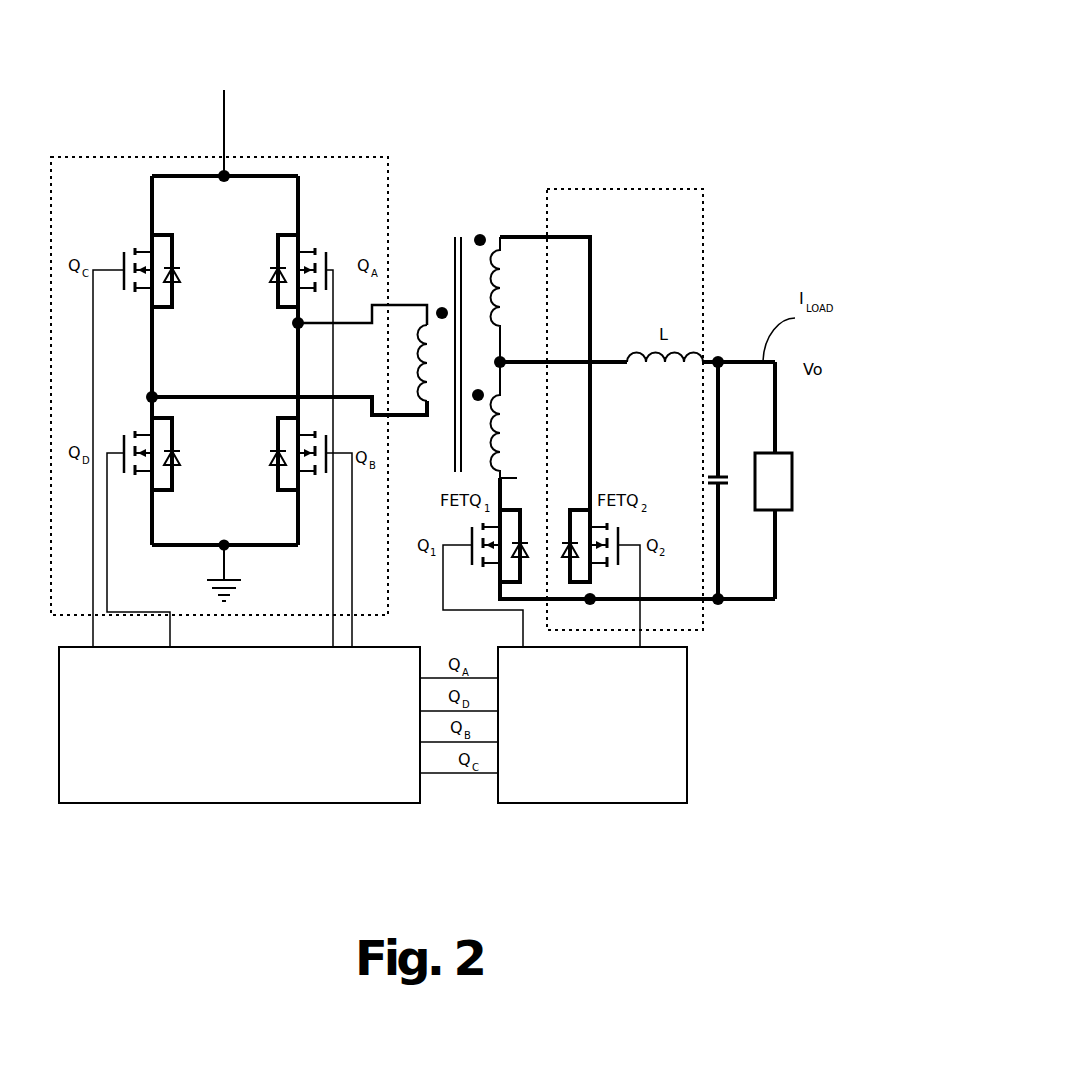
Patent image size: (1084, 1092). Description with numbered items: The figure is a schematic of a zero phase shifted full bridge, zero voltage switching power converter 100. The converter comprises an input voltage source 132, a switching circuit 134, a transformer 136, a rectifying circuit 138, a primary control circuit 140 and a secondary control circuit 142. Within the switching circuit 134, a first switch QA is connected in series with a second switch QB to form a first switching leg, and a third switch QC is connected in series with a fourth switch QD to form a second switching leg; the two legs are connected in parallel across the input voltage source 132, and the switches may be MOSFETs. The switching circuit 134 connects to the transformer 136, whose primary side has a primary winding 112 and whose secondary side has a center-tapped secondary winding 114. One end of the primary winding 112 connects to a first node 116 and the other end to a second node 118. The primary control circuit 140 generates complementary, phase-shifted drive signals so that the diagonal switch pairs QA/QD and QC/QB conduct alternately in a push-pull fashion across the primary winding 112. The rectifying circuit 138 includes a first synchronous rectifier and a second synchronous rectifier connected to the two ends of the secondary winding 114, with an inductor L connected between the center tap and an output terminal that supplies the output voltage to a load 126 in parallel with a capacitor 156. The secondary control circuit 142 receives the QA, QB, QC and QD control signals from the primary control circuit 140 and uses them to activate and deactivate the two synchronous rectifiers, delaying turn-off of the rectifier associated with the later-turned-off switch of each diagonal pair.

The power converter 100 is at (692, 57).
The primary winding 112 is at (434, 318).
The secondary winding 114 is at (498, 250).
The first node 116 is at (297, 323).
The second node 118 is at (158, 393).
The load 126 is at (792, 496).
The input voltage source 132 is at (229, 172).
The switching circuit 134 is at (318, 150).
The transformer 136 is at (448, 461).
The rectifying circuit 138 is at (642, 185).
The primary control circuit 140 is at (239, 805).
The secondary control circuit 142 is at (689, 718).
The capacitor 156 is at (720, 474).